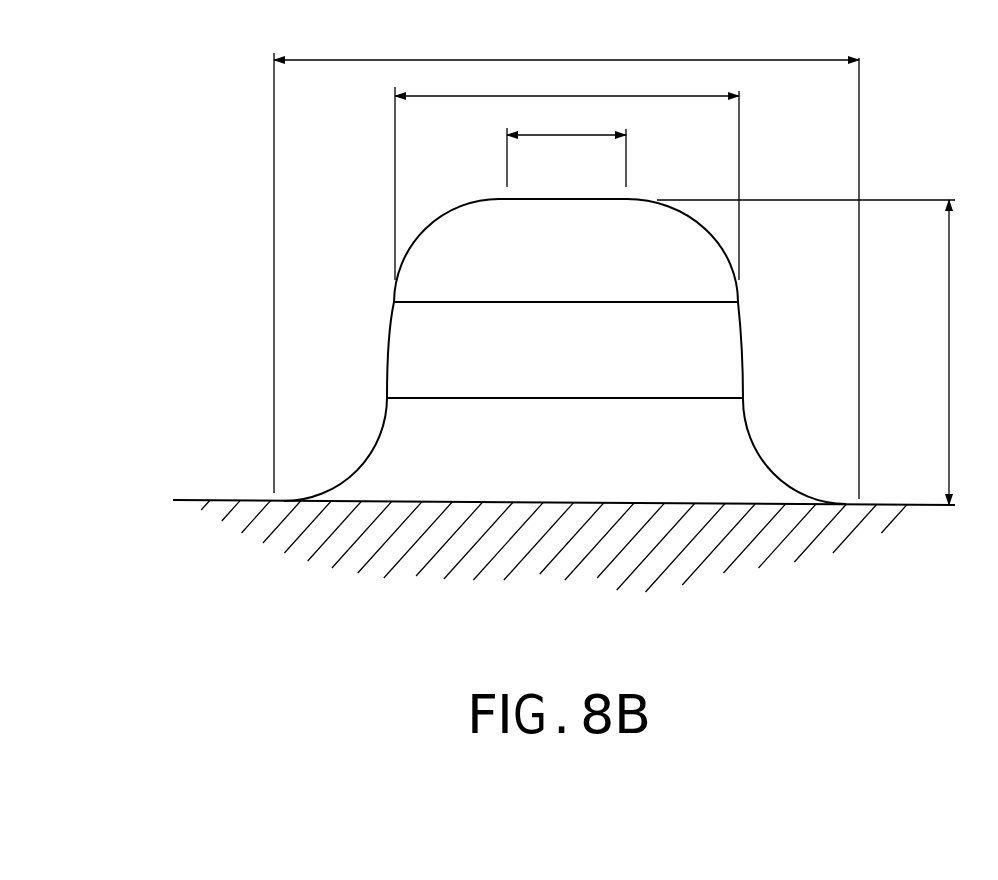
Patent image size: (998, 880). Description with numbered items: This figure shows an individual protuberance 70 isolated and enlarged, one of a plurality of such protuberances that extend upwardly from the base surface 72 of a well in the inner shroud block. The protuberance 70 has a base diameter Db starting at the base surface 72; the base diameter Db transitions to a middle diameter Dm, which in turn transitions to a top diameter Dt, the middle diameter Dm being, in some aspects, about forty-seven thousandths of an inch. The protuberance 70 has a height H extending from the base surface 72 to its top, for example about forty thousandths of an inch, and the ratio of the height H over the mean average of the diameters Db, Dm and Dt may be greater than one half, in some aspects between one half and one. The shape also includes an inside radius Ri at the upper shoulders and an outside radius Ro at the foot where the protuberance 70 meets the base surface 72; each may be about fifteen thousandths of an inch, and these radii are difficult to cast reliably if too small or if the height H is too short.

The protuberance 70 is at (438, 348).
The base surface 72 is at (228, 500).
The base diameter Db is at (566, 264).
The middle diameter Dm is at (567, 172).
The top diameter Dt is at (566, 145).
The height H is at (817, 352).
The inside radius Ri is at (437, 222).
The outside radius Ro is at (833, 428).